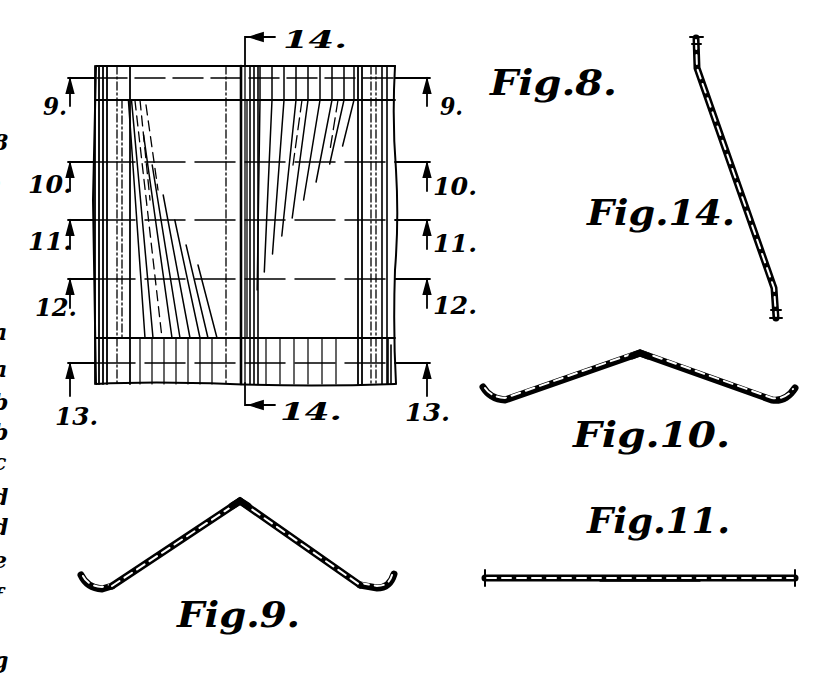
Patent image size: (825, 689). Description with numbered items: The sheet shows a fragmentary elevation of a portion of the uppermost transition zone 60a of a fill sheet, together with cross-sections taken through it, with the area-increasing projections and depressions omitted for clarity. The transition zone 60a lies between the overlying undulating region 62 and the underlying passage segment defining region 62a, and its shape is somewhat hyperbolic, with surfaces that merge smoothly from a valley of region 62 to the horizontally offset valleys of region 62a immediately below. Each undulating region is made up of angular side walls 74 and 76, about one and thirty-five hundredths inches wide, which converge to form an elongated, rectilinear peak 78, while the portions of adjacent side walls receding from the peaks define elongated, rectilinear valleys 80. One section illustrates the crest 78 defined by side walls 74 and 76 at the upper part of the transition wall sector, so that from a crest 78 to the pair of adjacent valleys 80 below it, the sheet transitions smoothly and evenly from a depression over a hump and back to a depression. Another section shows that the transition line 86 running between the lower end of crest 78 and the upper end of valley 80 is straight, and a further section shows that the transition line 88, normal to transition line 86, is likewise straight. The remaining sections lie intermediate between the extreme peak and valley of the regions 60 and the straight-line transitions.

In FIG. 10, the transition zone 60 is at (706, 375).
In FIG. 11, the transition zone 60 is at (550, 574).
In FIG. 8, the uppermost transition zone 60a is at (398, 144).
In FIG. 8, the horizontally extending undulating region 62 is at (398, 72).
In FIG. 8, the underlying passage segment defining region 62a is at (394, 353).
In FIG. 8, the angular side wall 74 is at (340, 70).
In FIG. 9, the angular side wall 74 is at (304, 544).
In FIG. 8, the angular side wall 76 is at (162, 74).
In FIG. 9, the angular side wall 76 is at (186, 534).
In FIG. 8, the peak 78 is at (238, 72).
In FIG. 9, the peak 78 is at (241, 499).
In FIG. 14, the peak 78 is at (686, 62).
In FIG. 8, the valley 80 is at (118, 72).
In FIG. 9, the valley 80 is at (110, 582).
In FIG. 14, the valley 80 is at (770, 312).
In FIG. 8, the transition line 86 is at (240, 203).
In FIG. 14, the transition line 86 is at (733, 163).
In FIG. 10, the transition line 86 is at (641, 352).
In FIG. 8, the transition line 88 is at (240, 225).
In FIG. 11, the transition line 88 is at (645, 580).